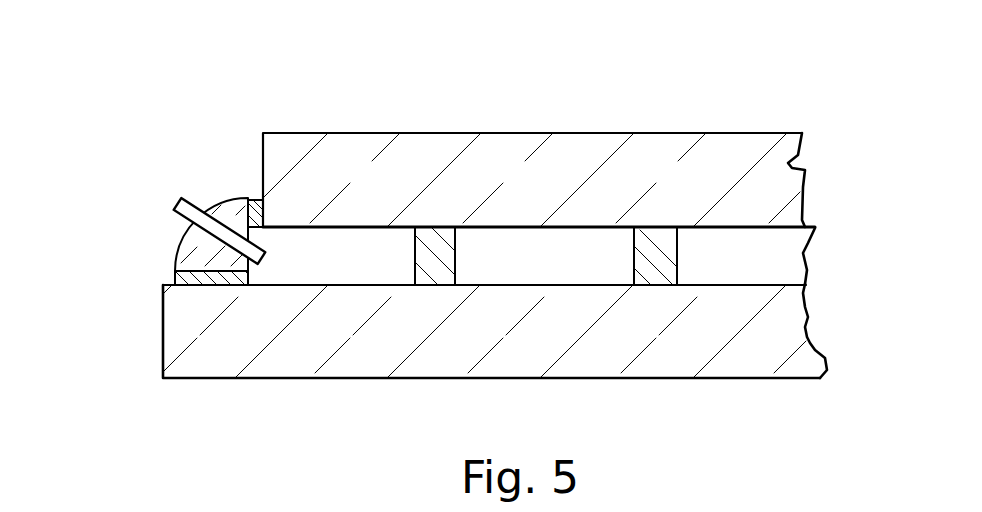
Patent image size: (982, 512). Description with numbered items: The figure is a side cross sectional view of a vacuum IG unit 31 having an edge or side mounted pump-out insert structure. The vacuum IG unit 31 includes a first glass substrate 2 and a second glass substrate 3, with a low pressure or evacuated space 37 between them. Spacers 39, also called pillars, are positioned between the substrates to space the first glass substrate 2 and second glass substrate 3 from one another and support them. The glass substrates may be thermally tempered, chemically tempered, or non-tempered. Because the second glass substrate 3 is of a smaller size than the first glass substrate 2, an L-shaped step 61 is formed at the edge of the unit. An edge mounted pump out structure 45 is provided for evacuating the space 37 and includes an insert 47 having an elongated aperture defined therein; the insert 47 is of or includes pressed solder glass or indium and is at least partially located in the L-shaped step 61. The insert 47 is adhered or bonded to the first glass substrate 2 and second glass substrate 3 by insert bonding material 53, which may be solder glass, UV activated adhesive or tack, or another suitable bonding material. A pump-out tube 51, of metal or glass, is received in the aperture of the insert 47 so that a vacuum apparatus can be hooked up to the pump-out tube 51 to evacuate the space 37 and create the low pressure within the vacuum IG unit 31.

The vacuum IG unit 31 is at (680, 68).
The second glass substrate 3 is at (418, 158).
The first glass substrate 2 is at (447, 362).
The low pressure space 37 is at (578, 258).
The spacers 39 is at (417, 255).
The insert bonding material 53 is at (257, 201).
The insert 47 is at (188, 255).
The pump-out tube 51 is at (191, 200).
The L-shaped step 61 is at (185, 151).
The edge mounted pump out structure 45 is at (140, 164).